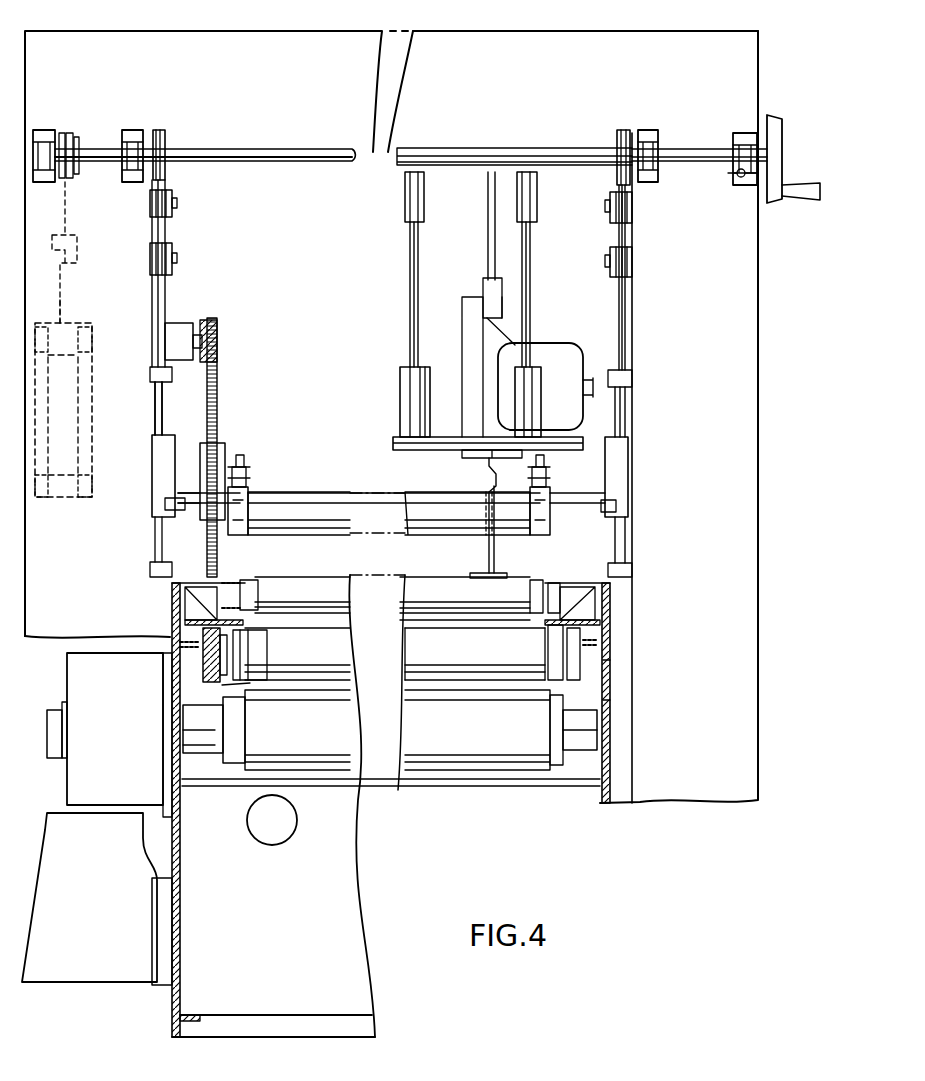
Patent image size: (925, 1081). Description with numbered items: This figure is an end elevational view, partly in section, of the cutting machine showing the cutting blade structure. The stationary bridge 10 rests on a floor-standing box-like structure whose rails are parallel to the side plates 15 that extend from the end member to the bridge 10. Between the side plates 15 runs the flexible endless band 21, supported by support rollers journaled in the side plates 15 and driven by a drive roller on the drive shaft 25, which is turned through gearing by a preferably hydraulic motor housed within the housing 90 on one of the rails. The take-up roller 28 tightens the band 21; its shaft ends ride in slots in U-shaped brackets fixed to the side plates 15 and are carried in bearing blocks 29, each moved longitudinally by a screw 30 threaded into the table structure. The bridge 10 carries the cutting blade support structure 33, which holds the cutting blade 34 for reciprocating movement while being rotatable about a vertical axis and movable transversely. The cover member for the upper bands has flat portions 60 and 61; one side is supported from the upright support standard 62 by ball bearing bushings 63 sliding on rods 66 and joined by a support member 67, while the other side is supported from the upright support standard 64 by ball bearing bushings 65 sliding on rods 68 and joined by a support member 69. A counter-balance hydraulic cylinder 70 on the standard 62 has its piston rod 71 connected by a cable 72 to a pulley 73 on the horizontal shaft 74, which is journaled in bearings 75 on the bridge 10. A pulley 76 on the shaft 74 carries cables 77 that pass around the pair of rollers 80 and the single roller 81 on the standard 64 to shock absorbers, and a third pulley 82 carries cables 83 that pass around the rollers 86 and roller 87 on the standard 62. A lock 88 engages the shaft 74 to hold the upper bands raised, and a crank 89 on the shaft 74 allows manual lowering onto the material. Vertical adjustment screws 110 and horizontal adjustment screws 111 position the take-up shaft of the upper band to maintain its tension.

The bridge 10 is at (737, 29).
The side plates 15 is at (236, 585).
The flexible endless band 21 is at (412, 580).
The drive shaft 25 is at (205, 757).
The take-up roller 28 is at (490, 655).
The bearing blocks 29 is at (205, 670).
The screw 30 is at (206, 644).
The cutting blade support structure 33 is at (406, 324).
The cutting blade 34 is at (489, 472).
The flat portion 60 is at (192, 510).
The flat portion 61 is at (585, 503).
The upright support standard 62 is at (25, 640).
The ball bearing bushings 63 is at (159, 492).
The upright support standard 64 is at (758, 432).
The ball bearing bushings 65 is at (632, 466).
The rod 66 is at (158, 430).
The support member 67 is at (162, 505).
The rod 68 is at (624, 410).
The support member 69 is at (616, 497).
The hydraulic cylinder 70 is at (92, 395).
The piston rod 71 is at (63, 300).
The cable 72 is at (80, 234).
The pulley 73 is at (66, 145).
The shaft 74 is at (238, 150).
The bearings 75 is at (133, 130).
The pulley 76 is at (619, 140).
The cables 77 is at (620, 310).
The rollers 80 is at (612, 258).
The roller 81 is at (612, 205).
The pulley 82 is at (163, 140).
The cables 83 is at (165, 300).
The rollers 86 is at (172, 255).
The roller 87 is at (173, 200).
The lock 88 is at (738, 176).
The crank 89 is at (787, 146).
The housing 90 is at (128, 759).
The vertical adjustment screws 110 is at (239, 474).
The horizontal adjustment screws 111 is at (248, 505).